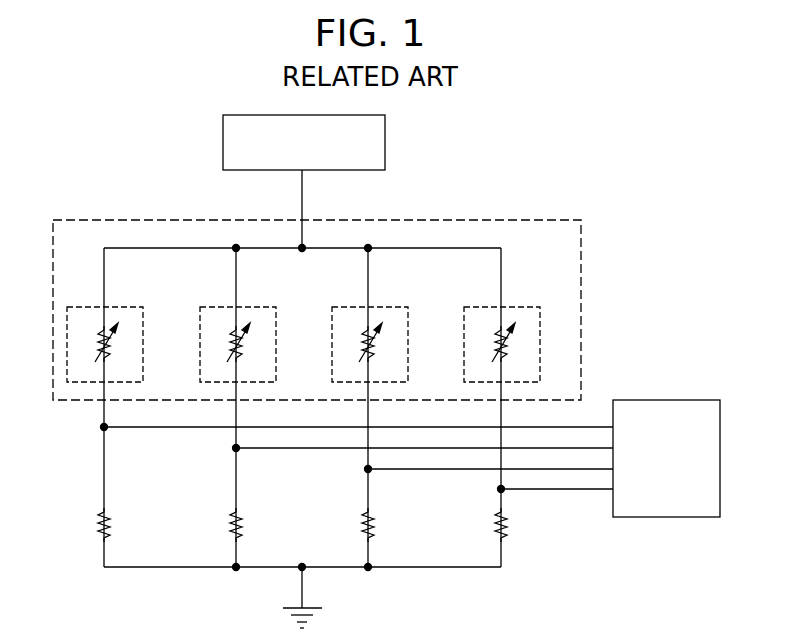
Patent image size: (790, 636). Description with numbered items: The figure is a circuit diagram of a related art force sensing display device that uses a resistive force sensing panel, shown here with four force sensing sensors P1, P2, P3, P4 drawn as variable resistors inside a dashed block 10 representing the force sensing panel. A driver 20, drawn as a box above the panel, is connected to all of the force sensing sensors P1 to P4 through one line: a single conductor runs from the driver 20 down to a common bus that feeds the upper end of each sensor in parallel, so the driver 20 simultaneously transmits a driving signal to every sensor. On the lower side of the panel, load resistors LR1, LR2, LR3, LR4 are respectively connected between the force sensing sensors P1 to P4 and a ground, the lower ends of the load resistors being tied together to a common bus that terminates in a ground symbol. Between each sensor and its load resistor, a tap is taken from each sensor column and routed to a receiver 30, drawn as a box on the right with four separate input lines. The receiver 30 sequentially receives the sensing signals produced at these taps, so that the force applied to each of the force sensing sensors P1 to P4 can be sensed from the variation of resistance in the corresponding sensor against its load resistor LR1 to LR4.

The pixel unit / variable resistor array 10 is at (503, 220).
The driver 20 is at (292, 153).
The receiver 30 is at (656, 471).
The force sensing sensor P1 is at (124, 307).
The force sensing sensor P2 is at (256, 307).
The force sensing sensor P3 is at (388, 307).
The force sensing sensor P4 is at (520, 307).
The load resistor LR1 is at (127, 525).
The load resistor LR2 is at (259, 525).
The load resistor LR3 is at (391, 525).
The load resistor LR4 is at (524, 525).